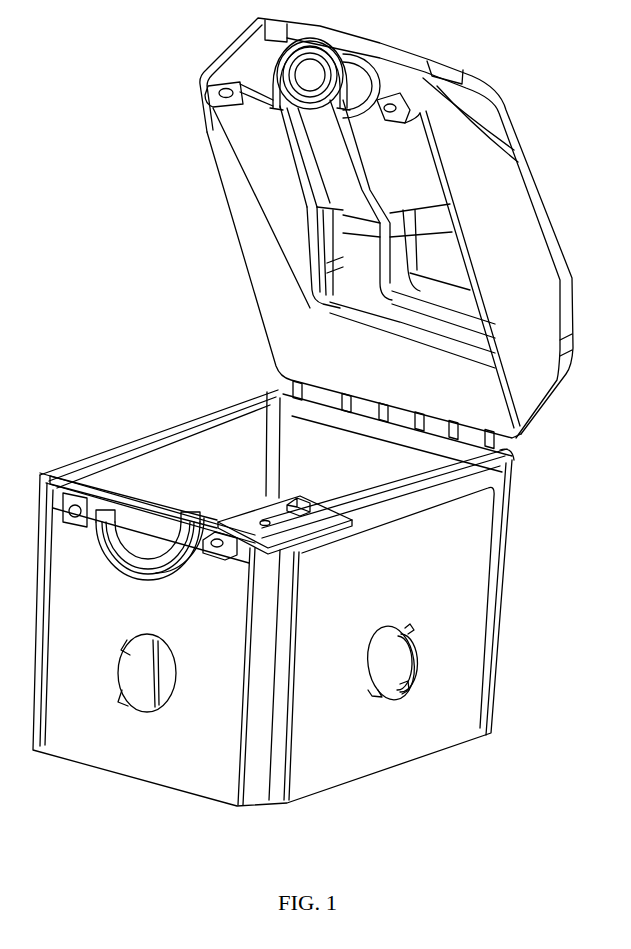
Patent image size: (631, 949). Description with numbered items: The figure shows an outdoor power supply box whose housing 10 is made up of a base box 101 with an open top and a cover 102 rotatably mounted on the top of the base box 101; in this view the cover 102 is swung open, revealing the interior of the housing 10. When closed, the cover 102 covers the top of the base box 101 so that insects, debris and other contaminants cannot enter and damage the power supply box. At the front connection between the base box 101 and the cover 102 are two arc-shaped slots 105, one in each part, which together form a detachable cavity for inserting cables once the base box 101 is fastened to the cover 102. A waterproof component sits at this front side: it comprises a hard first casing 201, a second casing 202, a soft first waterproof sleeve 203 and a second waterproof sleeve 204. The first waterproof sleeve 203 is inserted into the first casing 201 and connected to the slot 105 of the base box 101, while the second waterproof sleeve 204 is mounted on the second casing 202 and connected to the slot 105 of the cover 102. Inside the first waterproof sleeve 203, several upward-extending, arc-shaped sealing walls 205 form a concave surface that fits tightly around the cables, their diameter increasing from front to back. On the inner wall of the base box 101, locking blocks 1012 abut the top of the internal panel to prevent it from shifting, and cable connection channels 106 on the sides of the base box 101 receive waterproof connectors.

The housing 10 is at (316, 409).
The base box 101 is at (273, 596).
The cover 102 is at (399, 234).
The arc-shaped slot 105 is at (382, 80).
The cable connection channel 106 is at (419, 649).
The first casing 201 is at (351, 37).
The second casing 202 is at (156, 511).
The first waterproof sleeve 203 is at (281, 105).
The second waterproof sleeve 204 is at (191, 516).
The sealing wall 205 is at (314, 104).
The locking block 1012 is at (303, 496).